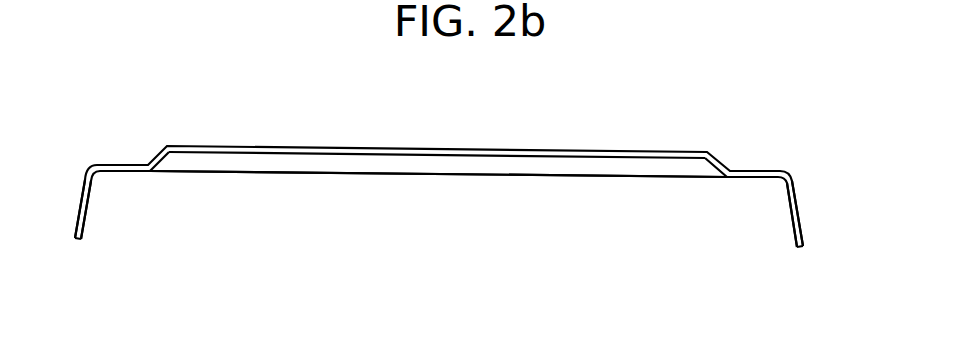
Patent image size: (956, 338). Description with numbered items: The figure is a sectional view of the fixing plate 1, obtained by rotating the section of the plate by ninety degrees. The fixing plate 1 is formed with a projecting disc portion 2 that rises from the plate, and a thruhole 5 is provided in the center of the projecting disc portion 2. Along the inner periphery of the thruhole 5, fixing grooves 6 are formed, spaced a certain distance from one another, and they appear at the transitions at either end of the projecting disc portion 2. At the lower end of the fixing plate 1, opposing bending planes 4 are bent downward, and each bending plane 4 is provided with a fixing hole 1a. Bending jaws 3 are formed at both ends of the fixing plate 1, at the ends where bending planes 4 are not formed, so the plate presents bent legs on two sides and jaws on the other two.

The fixing plate 1 is at (117, 139).
The fixing hole 1a is at (790, 213).
The projecting disc portion 2 is at (722, 157).
The bending jaw 3 is at (547, 175).
The bending plane 4 is at (85, 227).
The thruhole 5 is at (337, 150).
The fixing groove 6 is at (198, 145).